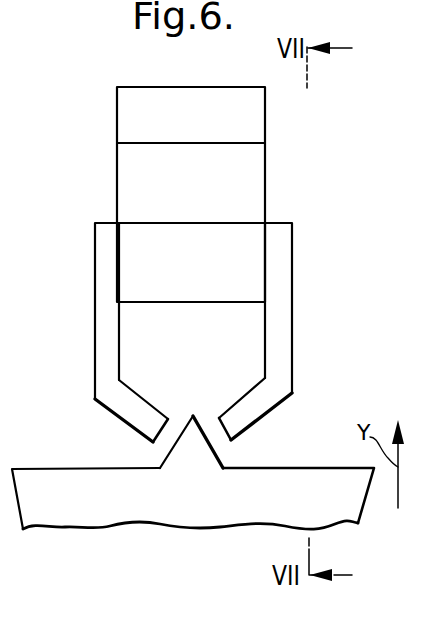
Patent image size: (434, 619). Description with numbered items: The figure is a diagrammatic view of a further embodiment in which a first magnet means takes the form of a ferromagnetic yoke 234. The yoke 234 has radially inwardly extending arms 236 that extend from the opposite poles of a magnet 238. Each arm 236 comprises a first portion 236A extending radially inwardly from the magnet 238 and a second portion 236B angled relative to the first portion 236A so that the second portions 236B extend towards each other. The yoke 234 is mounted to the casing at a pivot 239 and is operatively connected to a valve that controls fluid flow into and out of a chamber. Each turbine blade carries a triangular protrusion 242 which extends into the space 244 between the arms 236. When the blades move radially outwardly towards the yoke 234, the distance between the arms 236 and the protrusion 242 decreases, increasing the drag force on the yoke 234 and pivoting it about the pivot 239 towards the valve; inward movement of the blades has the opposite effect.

The ferromagnetic yoke 234 is at (90, 206).
The arms 236 is at (85, 251).
The first portion 236A is at (102, 330).
The second portion 236B is at (250, 415).
The magnet 238 is at (240, 223).
The pivot 239 is at (125, 78).
The triangular protrusion 242 is at (193, 450).
The space 244 is at (163, 443).